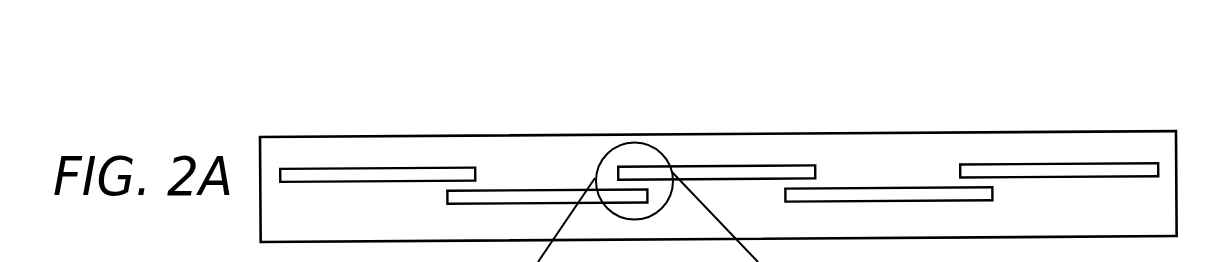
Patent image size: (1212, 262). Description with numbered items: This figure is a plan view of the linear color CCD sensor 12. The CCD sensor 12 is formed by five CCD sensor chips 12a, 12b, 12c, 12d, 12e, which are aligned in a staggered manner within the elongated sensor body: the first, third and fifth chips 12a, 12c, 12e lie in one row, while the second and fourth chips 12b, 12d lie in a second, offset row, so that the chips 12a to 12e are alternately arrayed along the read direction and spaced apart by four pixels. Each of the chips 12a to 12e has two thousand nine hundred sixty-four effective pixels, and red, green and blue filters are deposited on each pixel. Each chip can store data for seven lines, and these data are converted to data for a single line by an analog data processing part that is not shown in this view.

The linear color CCD sensor 12 is at (1075, 129).
The CCD sensor chip 12a is at (395, 167).
The CCD sensor chip 12b is at (525, 190).
The CCD sensor chip 12c is at (722, 165).
The CCD sensor chip 12d is at (870, 186).
The CCD sensor chip 12e is at (1012, 162).